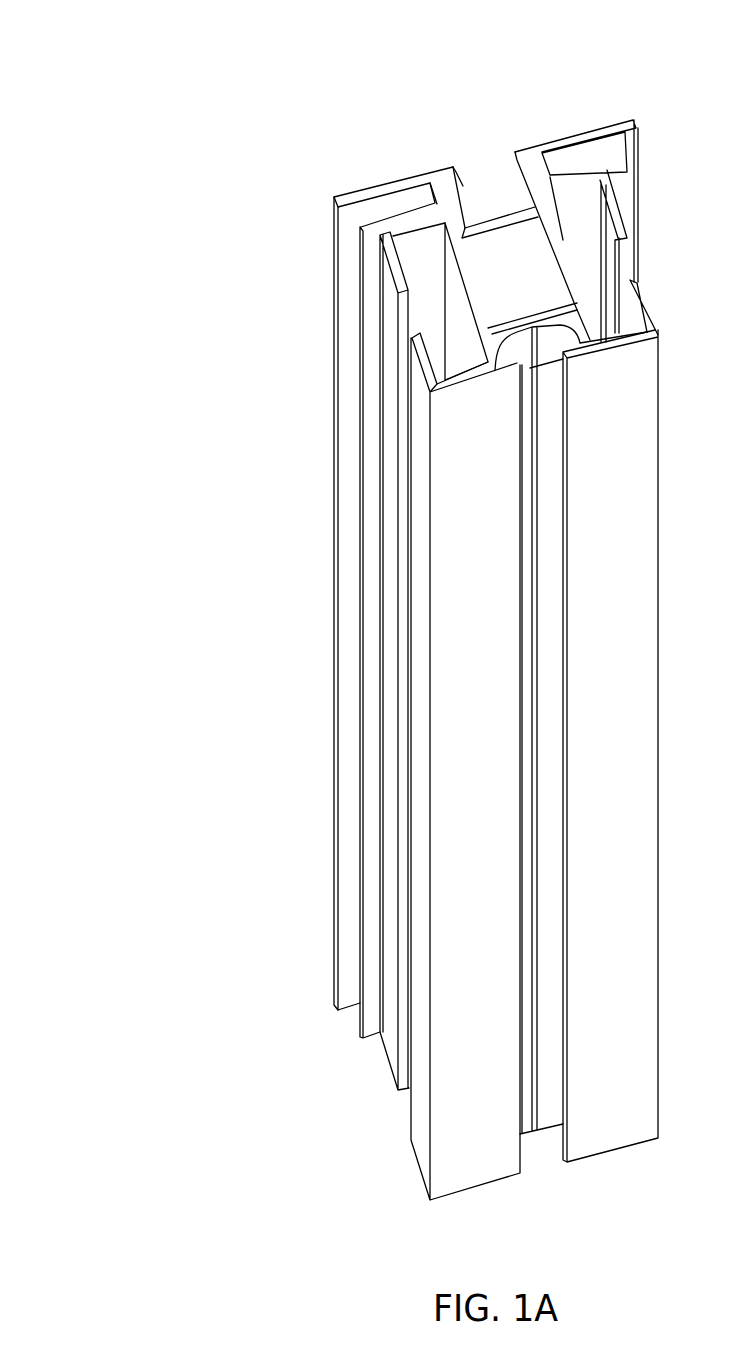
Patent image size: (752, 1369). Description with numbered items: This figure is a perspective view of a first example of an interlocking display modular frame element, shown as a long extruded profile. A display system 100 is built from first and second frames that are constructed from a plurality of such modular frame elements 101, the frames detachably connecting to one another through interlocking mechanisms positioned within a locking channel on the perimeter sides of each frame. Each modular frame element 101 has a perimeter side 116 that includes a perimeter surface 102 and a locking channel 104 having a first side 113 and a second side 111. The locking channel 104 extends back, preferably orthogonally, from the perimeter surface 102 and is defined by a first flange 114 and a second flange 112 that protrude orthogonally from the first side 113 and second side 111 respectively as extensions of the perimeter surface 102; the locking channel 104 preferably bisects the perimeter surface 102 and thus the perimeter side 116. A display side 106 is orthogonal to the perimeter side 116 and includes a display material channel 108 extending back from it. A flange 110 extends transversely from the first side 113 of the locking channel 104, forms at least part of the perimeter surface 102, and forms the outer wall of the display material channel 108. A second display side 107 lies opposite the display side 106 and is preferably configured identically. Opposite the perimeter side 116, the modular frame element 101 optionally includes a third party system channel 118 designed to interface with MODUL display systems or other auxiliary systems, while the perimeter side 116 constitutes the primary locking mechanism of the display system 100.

The display system 100 is at (116, 26).
The modular frame element 101 is at (318, 604).
The perimeter surface 102 is at (398, 178).
The locking channel 104 is at (492, 160).
The display side 106 is at (378, 342).
The second display side 107 is at (672, 310).
The display material channel 108 is at (352, 226).
The flange 110 is at (333, 288).
The second side 111 is at (527, 204).
The second flange 112 is at (516, 152).
The first side 113 is at (432, 190).
The first flange 114 is at (468, 196).
The perimeter side 116 is at (580, 122).
The third party system channel 118 is at (555, 444).